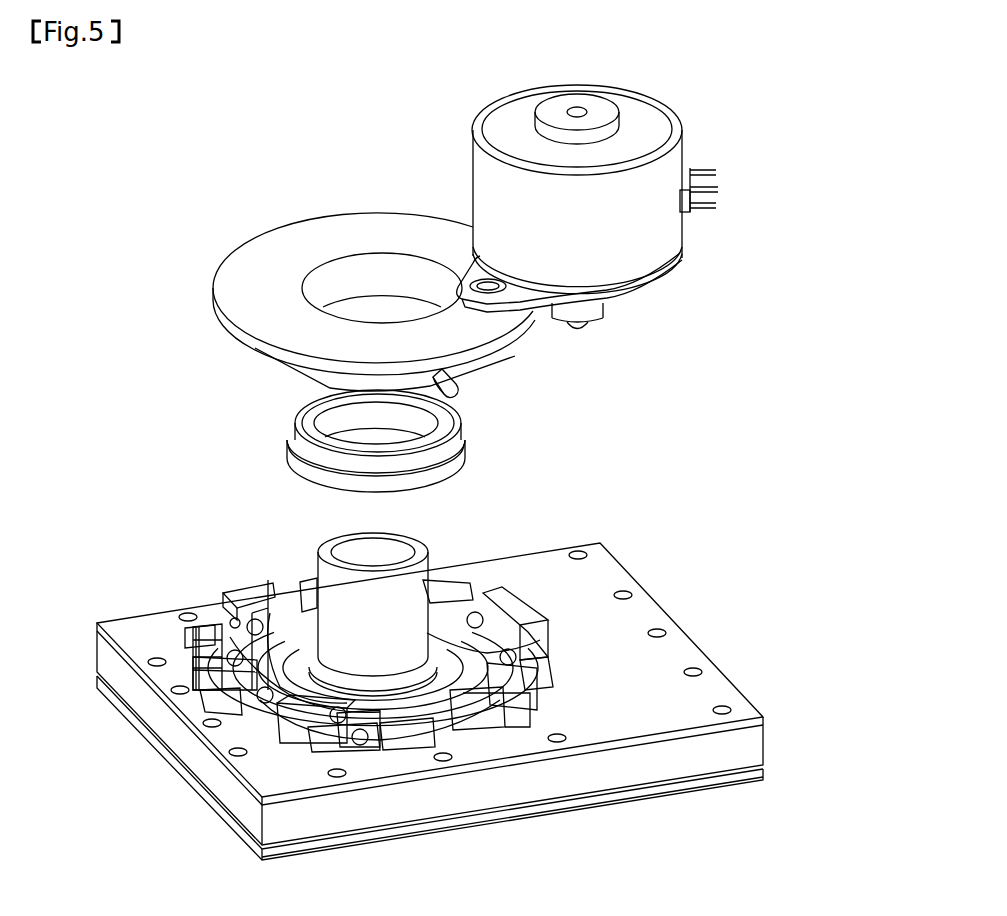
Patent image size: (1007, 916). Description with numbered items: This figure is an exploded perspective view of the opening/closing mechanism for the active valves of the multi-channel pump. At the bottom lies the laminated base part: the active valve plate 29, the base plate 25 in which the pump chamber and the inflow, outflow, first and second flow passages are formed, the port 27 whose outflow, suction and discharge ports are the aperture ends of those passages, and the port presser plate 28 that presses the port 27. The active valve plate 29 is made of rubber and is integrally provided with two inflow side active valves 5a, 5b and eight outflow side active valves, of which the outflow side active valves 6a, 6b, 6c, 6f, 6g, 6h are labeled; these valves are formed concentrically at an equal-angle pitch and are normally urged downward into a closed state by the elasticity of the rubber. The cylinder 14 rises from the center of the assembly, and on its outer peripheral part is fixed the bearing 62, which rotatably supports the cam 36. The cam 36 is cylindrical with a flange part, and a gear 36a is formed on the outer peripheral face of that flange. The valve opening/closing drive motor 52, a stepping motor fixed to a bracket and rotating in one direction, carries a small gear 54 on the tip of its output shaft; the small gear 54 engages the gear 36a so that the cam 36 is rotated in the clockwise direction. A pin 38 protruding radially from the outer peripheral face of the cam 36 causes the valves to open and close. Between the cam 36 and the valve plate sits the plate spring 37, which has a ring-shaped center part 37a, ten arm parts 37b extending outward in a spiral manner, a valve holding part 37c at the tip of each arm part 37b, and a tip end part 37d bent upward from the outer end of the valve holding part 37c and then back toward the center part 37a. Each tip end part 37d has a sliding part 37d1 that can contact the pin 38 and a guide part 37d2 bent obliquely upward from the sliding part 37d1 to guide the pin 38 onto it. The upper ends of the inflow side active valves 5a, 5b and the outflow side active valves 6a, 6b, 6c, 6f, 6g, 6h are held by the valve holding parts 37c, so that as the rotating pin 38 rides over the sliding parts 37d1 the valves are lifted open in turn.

The valve opening/closing drive motor 52 is at (650, 118).
The small gear 54 is at (590, 313).
The cam 36 is at (297, 250).
The gear 36a is at (243, 334).
The pin 38 is at (457, 389).
The bearing 62 is at (285, 442).
The cylinder 14 is at (413, 552).
The plate spring 37 is at (517, 592).
The center part 37a is at (308, 582).
The arm part 37b is at (272, 640).
The valve holding part 37c is at (227, 610).
The tip end part 37d is at (220, 592).
The sliding part 37d1 is at (250, 595).
The guide part 37d2 is at (238, 597).
The inflow side active valve 5a is at (475, 612).
The inflow side active valve 5b is at (553, 648).
The outflow side active valve 6a is at (245, 710).
The outflow side active valve 6b is at (208, 673).
The outflow side active valve 6c is at (197, 632).
The outflow side active valve 6f is at (497, 723).
The outflow side active valve 6g is at (443, 737).
The outflow side active valve 6h is at (358, 752).
The active valve plate 29 is at (765, 715).
The base plate 25 is at (765, 748).
The port 27 is at (765, 772).
The port presser plate 28 is at (742, 780).